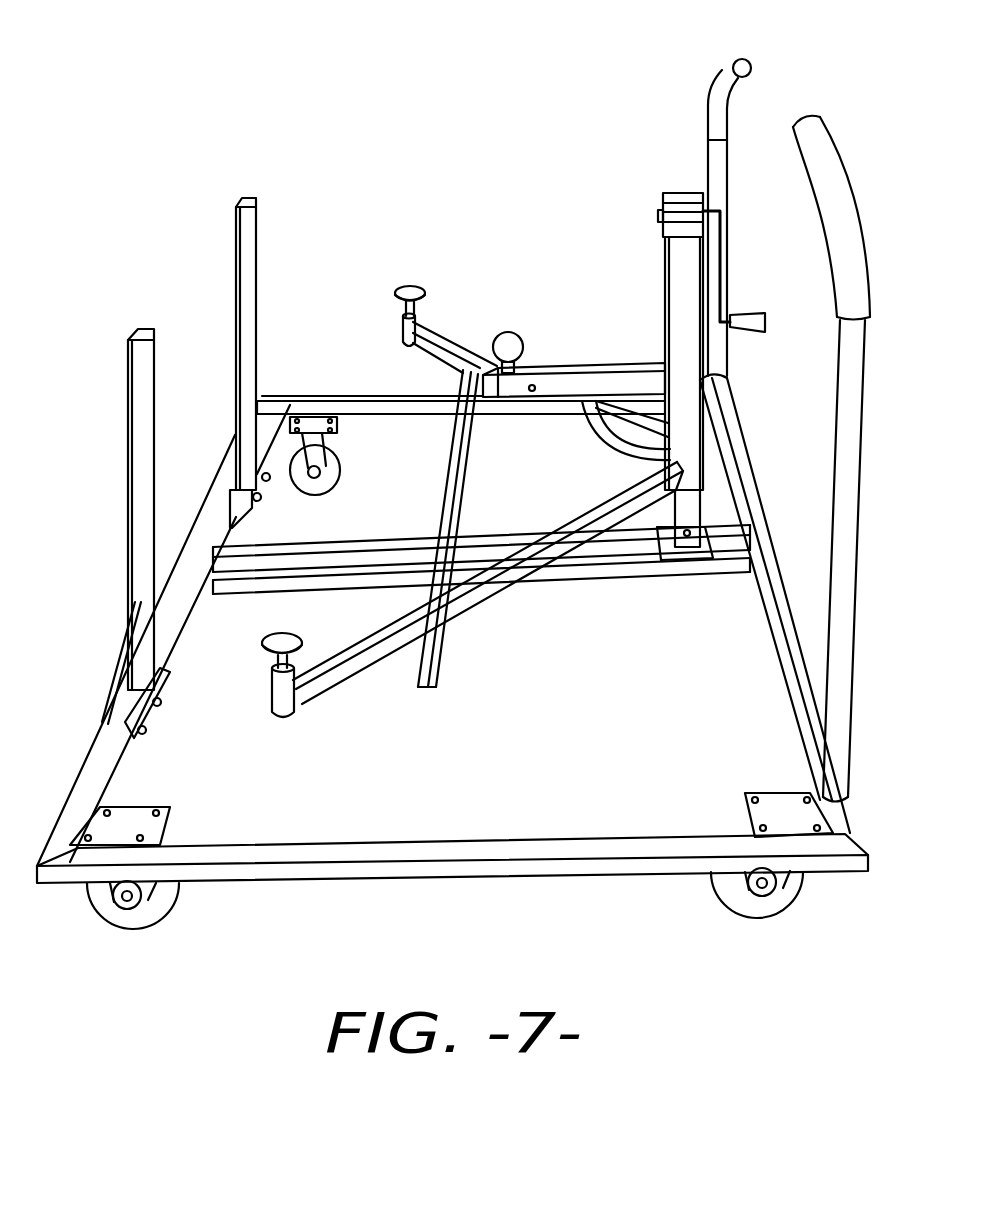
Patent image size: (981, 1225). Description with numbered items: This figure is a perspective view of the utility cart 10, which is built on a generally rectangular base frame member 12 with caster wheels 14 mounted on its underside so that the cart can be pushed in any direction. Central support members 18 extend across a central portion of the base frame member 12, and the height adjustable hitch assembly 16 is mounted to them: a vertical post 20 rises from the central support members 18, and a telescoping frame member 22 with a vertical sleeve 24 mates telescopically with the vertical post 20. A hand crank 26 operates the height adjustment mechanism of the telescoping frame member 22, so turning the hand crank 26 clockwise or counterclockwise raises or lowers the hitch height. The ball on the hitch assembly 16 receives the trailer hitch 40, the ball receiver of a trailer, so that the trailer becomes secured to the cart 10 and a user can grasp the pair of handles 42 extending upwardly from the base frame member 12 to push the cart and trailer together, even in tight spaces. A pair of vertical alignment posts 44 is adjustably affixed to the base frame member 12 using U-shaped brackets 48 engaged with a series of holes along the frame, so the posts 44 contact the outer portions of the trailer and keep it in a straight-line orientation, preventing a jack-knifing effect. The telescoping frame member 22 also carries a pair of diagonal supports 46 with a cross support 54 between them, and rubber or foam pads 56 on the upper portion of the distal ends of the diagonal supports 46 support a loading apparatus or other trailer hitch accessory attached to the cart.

The utility cart 10 is at (411, 127).
The base frame member 12 is at (560, 866).
The caster wheels 14 is at (345, 452).
The height adjustable hitch assembly 16 is at (665, 320).
The central support members 18 is at (590, 574).
The vertical post 20 is at (687, 505).
The telescoping frame member 22 is at (682, 260).
The vertical sleeve 24 is at (680, 393).
The hand crank 26 is at (747, 307).
The trailer hitch 40 is at (507, 335).
The handles 42 is at (716, 92).
The vertical alignment posts 44 is at (235, 290).
The diagonal supports 46 is at (455, 340).
The U-shaped brackets 48 is at (230, 493).
The cross support 54 is at (443, 483).
The rubber or foam pads 56 is at (407, 298).